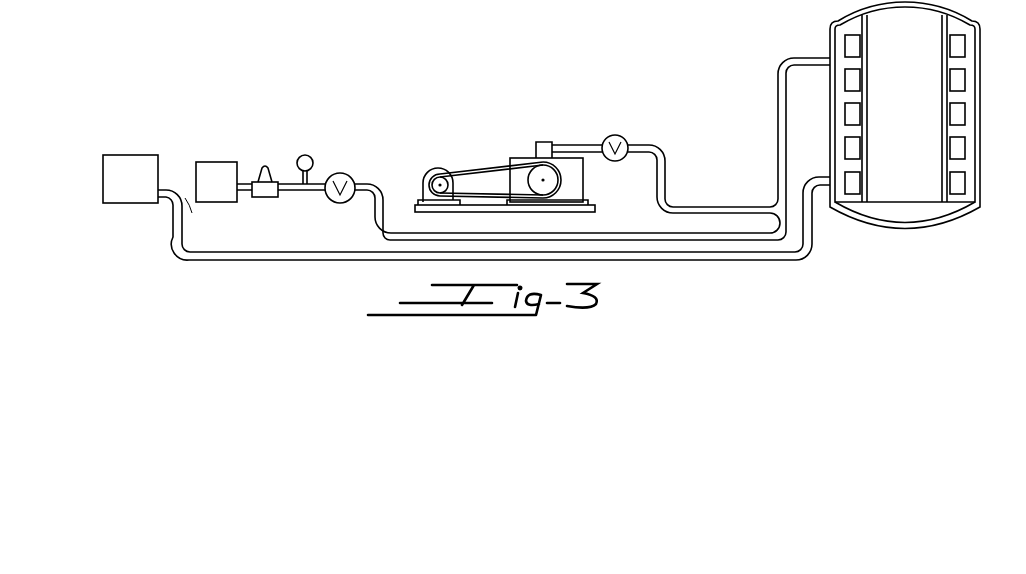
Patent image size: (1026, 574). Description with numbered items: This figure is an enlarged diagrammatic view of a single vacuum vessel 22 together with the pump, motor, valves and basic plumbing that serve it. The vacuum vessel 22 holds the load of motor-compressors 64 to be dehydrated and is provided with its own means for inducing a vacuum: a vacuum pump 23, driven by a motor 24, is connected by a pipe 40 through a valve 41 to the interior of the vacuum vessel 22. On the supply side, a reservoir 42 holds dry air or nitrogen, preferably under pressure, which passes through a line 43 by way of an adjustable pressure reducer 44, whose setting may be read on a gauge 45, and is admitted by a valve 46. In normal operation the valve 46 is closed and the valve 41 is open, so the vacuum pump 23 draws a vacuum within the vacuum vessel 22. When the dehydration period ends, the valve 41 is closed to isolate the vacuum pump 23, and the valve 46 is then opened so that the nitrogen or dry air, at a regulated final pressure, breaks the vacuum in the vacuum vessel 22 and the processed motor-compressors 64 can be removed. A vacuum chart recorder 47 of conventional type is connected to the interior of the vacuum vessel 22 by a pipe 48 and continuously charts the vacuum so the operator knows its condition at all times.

The vacuum vessel 22 is at (983, 88).
The vacuum pump 23 is at (580, 183).
The motor 24 is at (444, 172).
The pipe 40 is at (708, 207).
The valve 41 is at (612, 136).
The reservoir 42 is at (215, 163).
The line 43 is at (608, 236).
The adjustable pressure reducer 44 is at (268, 169).
The gauge 45 is at (307, 155).
The valve 46 is at (344, 173).
The vacuum chart recorder 47 is at (137, 157).
The pipe 48 is at (255, 257).
The motor-compressor 64 is at (963, 50).